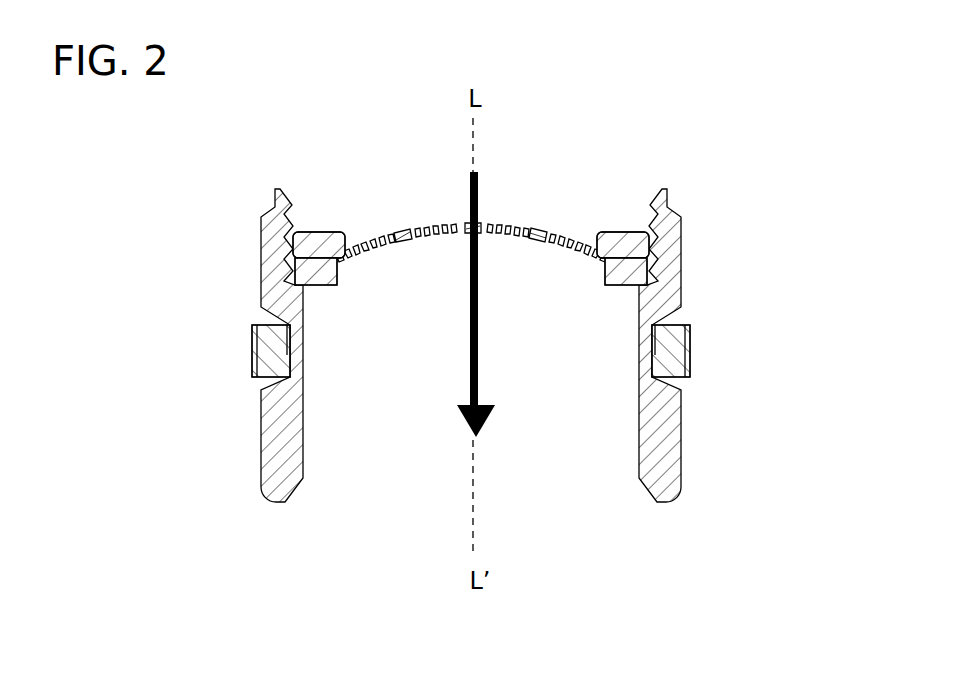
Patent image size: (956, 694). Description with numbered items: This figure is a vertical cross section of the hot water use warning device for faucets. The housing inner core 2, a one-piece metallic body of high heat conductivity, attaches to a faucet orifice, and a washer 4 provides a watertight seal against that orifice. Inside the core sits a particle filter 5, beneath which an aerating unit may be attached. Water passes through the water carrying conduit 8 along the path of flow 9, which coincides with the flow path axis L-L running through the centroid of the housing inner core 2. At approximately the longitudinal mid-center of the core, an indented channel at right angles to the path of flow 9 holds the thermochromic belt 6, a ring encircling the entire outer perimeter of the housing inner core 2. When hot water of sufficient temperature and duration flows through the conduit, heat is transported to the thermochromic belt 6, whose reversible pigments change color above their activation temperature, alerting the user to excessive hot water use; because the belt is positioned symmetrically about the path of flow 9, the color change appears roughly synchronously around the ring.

The housing inner core 2 is at (255, 438).
The washer 4 is at (321, 228).
The particle filter 5 is at (527, 224).
The thermochromic belt 6 is at (242, 348).
The water carrying conduit 8 is at (386, 446).
The path of flow 9 is at (483, 358).